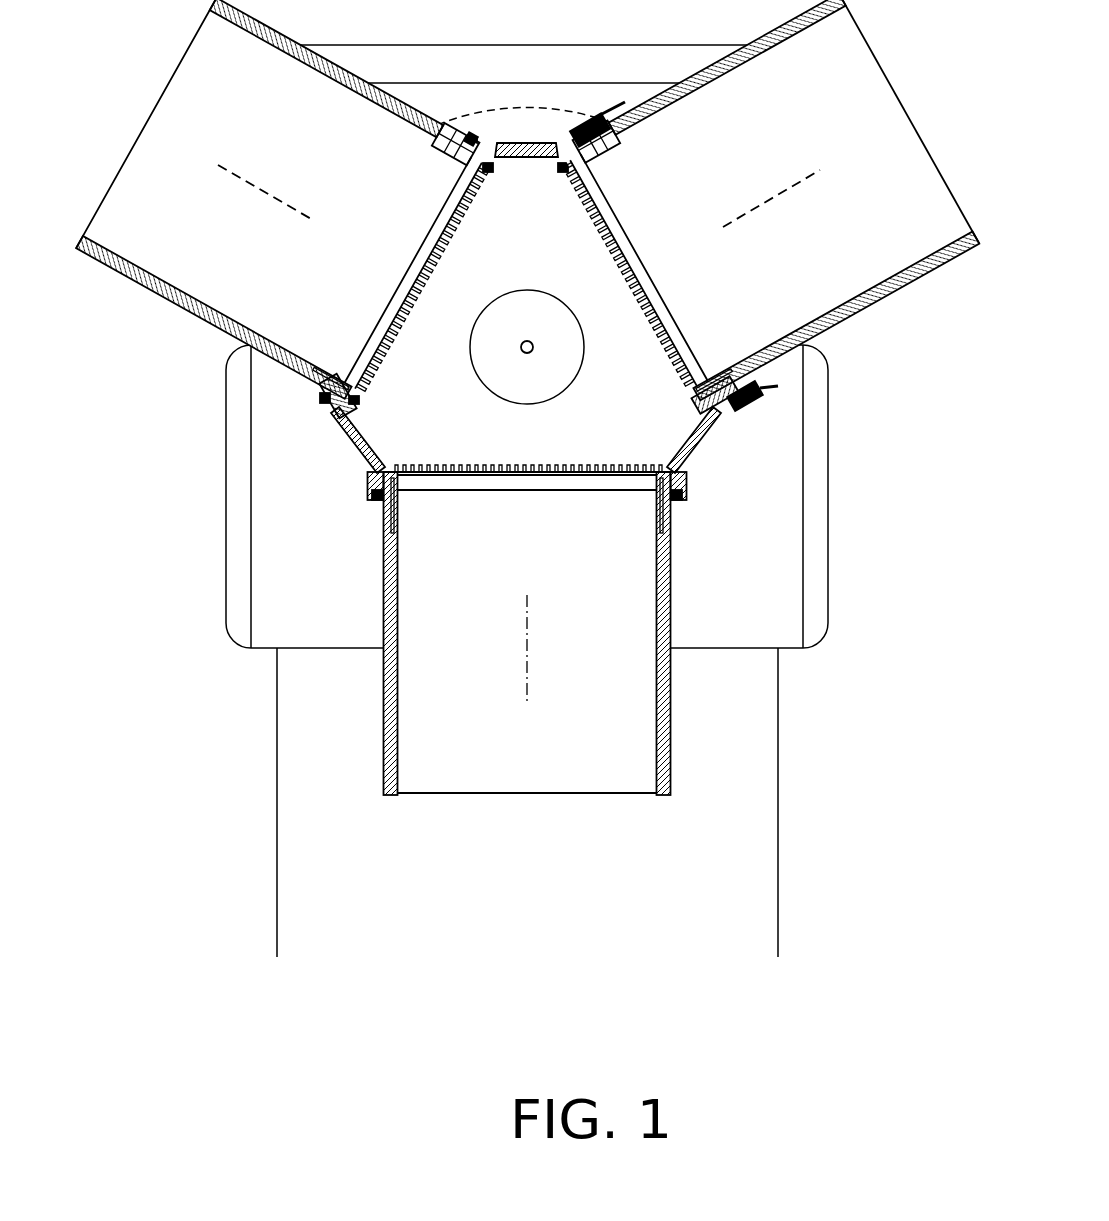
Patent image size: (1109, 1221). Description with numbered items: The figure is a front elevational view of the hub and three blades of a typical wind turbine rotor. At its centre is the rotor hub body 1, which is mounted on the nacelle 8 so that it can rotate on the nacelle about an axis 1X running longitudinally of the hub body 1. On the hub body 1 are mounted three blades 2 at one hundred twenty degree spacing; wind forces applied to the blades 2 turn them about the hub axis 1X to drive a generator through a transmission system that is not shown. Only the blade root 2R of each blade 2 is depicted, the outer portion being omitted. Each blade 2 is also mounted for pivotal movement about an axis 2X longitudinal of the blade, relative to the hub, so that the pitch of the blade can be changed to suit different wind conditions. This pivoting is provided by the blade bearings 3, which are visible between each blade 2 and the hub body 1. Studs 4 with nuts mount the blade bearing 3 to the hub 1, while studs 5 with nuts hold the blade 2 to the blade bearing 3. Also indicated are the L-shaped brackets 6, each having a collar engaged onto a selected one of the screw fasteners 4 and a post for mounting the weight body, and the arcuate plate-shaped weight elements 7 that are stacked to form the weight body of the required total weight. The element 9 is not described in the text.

The rotor hub body 1 is at (643, 433).
The hub axis 1X is at (521, 350).
The blade 2 is at (566, 397).
The blade axis 2X is at (257, 187).
The blade root 2R is at (385, 705).
The blade bearing 3 is at (693, 352).
The stud 4 is at (367, 485).
The stud 5 is at (670, 532).
The L-shaped bracket 6 is at (773, 390).
The weight element 7 is at (613, 118).
The nacelle 8 is at (288, 398).
The support base 9 is at (711, 863).